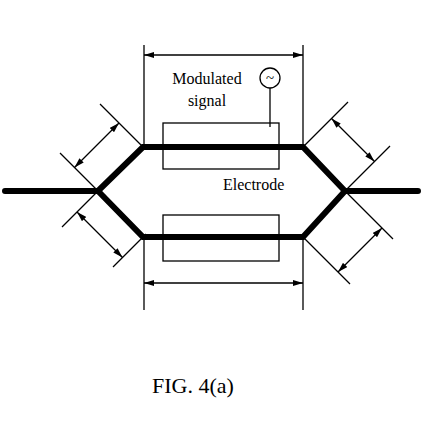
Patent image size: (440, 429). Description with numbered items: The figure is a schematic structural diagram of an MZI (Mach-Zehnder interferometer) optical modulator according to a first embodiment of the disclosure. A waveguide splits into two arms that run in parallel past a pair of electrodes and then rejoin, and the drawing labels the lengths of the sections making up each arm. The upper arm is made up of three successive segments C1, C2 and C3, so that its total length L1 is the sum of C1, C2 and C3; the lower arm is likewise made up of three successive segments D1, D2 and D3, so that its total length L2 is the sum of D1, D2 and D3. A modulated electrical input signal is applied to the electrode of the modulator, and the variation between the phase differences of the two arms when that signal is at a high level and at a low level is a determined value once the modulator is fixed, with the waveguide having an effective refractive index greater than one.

The upper arm length segment C1 is at (102, 148).
The upper arm length segment C2 is at (223, 85).
The upper arm length segment C3 is at (345, 147).
The lower arm length segment D1 is at (104, 228).
The lower arm length segment D2 is at (223, 276).
The lower arm length segment D3 is at (347, 236).